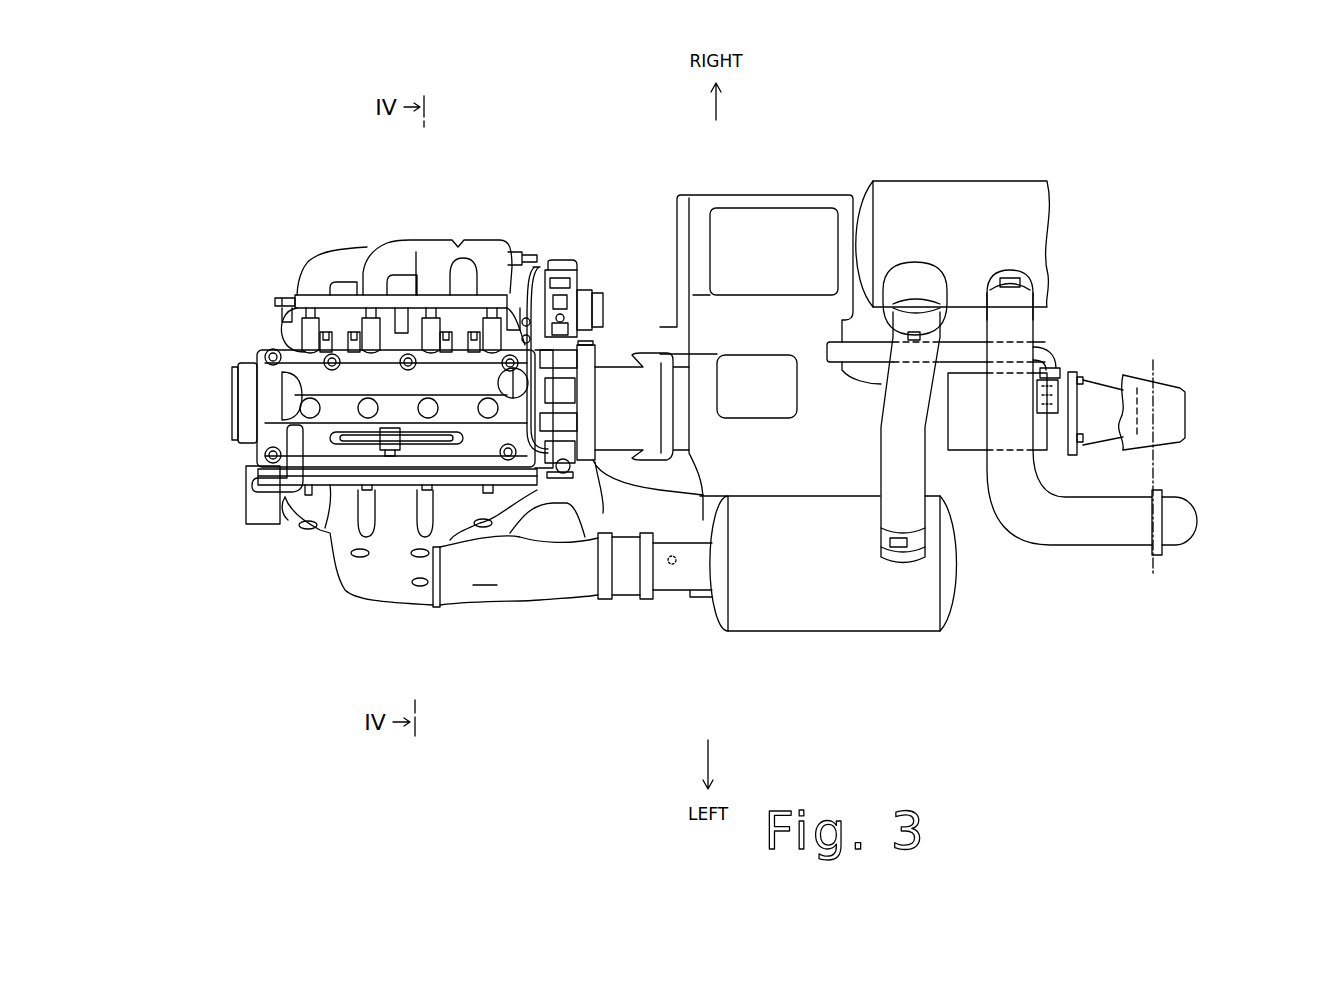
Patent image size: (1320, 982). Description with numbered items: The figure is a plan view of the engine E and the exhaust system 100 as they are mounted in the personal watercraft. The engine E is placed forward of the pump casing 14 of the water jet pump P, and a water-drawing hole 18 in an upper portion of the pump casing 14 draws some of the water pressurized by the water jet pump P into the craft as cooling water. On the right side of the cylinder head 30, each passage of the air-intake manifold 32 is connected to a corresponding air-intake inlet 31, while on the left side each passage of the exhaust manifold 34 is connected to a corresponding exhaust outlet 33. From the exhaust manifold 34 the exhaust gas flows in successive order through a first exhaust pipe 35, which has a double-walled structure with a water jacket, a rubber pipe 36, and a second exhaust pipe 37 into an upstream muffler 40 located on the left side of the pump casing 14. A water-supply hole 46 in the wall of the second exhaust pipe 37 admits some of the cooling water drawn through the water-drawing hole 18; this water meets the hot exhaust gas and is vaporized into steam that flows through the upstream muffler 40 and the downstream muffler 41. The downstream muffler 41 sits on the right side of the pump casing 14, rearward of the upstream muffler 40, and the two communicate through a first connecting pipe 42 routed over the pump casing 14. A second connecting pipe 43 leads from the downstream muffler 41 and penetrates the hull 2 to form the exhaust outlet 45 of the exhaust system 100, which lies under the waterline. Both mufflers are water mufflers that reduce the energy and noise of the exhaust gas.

The engine E is at (228, 247).
The exhaust system 100 is at (481, 637).
The cylinder head 30 is at (231, 413).
The air-intake inlet 31 is at (285, 320).
The air-intake manifold 32 is at (402, 243).
The exhaust outlet 33 is at (333, 530).
The exhaust manifold 34 is at (380, 600).
The first exhaust pipe 35 is at (530, 603).
The rubber pipe 36 is at (627, 590).
The second exhaust pipe 37 is at (667, 592).
The water-supply hole 46 is at (672, 563).
The upstream muffler 40 is at (827, 632).
The downstream muffler 41 is at (968, 173).
The first connecting pipe 42 is at (930, 470).
The second connecting pipe 43 is at (1033, 318).
The pump casing 14 is at (1042, 458).
The water-drawing hole 18 is at (1045, 413).
The water jet pump P is at (1103, 351).
The hull 2 is at (1157, 463).
The exhaust outlet 45 is at (1198, 523).